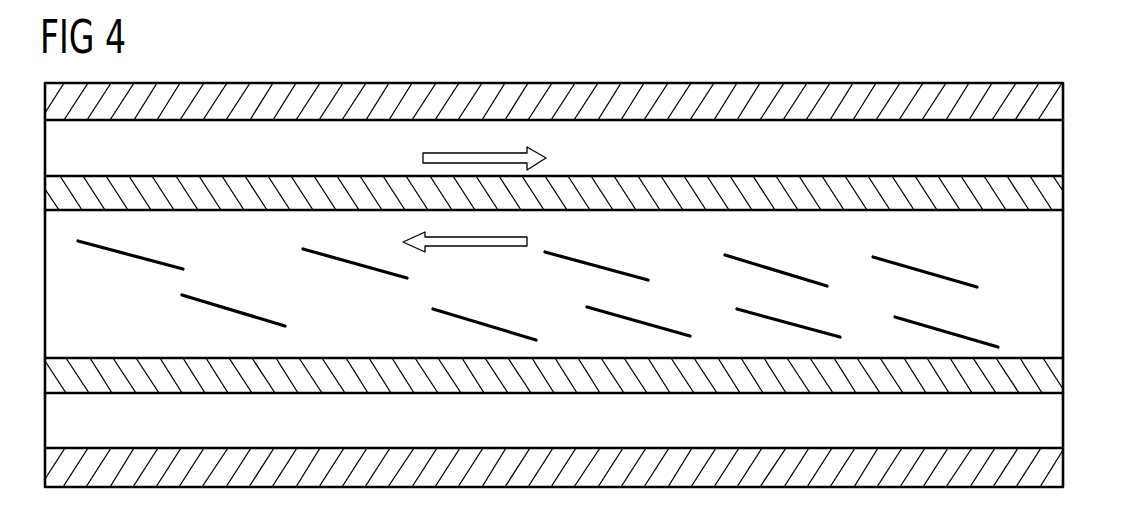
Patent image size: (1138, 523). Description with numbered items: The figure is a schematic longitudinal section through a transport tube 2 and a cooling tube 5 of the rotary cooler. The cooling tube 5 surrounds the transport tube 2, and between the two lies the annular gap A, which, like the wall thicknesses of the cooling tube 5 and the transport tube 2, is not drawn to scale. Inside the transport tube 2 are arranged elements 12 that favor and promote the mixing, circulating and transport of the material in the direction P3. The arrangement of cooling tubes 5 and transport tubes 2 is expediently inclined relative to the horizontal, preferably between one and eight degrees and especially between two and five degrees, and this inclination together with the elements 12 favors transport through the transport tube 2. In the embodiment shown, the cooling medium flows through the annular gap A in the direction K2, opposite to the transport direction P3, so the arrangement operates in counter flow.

The cooling tube 5 is at (1063, 102).
The transport tube 2 is at (1063, 193).
The annular gap A is at (1069, 122).
The elements 12 is at (177, 268).
The direction of cooling medium flow K2 is at (423, 158).
The transport direction P3 is at (527, 244).